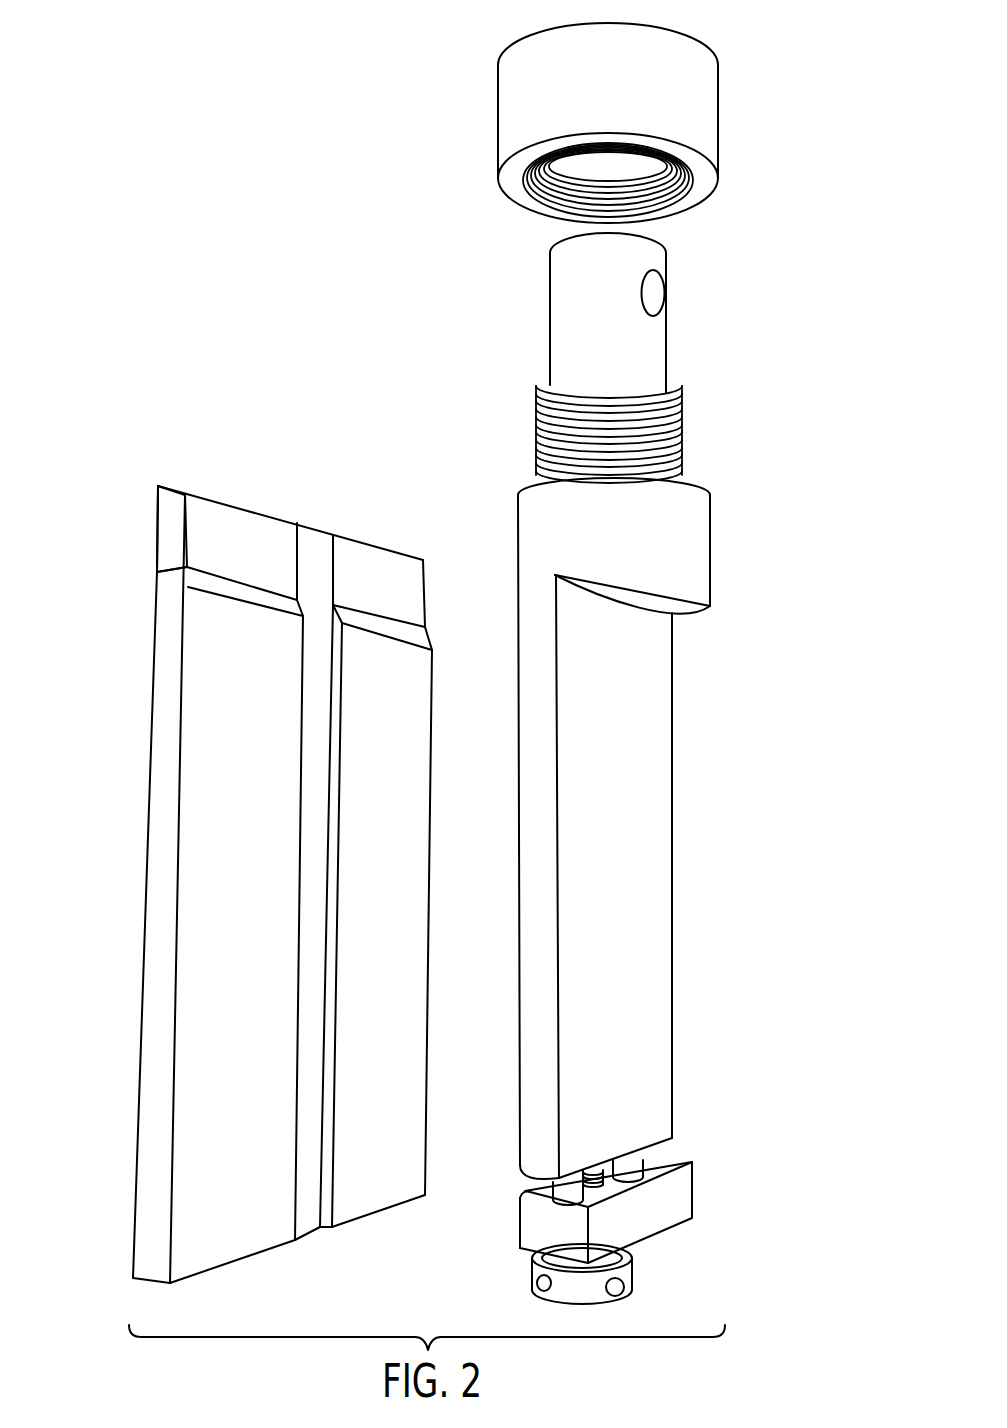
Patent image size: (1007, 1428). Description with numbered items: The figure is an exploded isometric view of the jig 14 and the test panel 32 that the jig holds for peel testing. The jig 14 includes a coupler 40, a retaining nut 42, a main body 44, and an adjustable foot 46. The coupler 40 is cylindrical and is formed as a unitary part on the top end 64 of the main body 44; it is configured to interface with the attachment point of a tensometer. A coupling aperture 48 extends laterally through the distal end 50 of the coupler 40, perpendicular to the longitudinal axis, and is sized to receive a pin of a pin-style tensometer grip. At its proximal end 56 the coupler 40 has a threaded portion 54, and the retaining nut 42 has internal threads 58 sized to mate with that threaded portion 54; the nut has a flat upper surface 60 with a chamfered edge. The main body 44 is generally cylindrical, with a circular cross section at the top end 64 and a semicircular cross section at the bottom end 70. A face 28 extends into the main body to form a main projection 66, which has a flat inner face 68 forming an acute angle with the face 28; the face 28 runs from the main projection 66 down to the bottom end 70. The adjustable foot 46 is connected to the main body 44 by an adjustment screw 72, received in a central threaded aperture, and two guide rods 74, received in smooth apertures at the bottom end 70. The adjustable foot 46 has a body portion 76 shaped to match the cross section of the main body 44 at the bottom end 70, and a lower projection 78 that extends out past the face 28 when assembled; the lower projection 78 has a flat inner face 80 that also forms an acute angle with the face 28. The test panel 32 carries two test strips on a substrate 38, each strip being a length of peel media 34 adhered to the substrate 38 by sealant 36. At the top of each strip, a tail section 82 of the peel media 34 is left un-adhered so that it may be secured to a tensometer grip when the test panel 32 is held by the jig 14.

The jig 14 is at (640, 674).
The face 28 is at (650, 875).
The test panel 32 is at (245, 832).
The peel media 34 is at (187, 1102).
The sealant 36 is at (148, 987).
The substrate 38 is at (172, 540).
The coupler 40 is at (650, 353).
The retaining nut 42 is at (499, 108).
The main body 44 is at (697, 510).
The adjustable foot 46 is at (618, 1213).
The coupling aperture 48 is at (653, 292).
The distal end 50 is at (596, 358).
The threaded portion 54 is at (675, 437).
The proximal end 56 is at (596, 425).
The internal threads 58 is at (541, 189).
The upper surface 60 is at (616, 137).
The top end 64 is at (657, 801).
The main projection 66 is at (697, 585).
The inner face 68 is at (668, 604).
The bottom end 70 is at (640, 837).
The adjustment screw 72 is at (613, 1180).
The guide rods 74 is at (637, 1165).
The body portion 76 is at (548, 1218).
The lower projection 78 is at (578, 1215).
The inner face 80 is at (696, 1152).
The tail section 82 is at (240, 524).